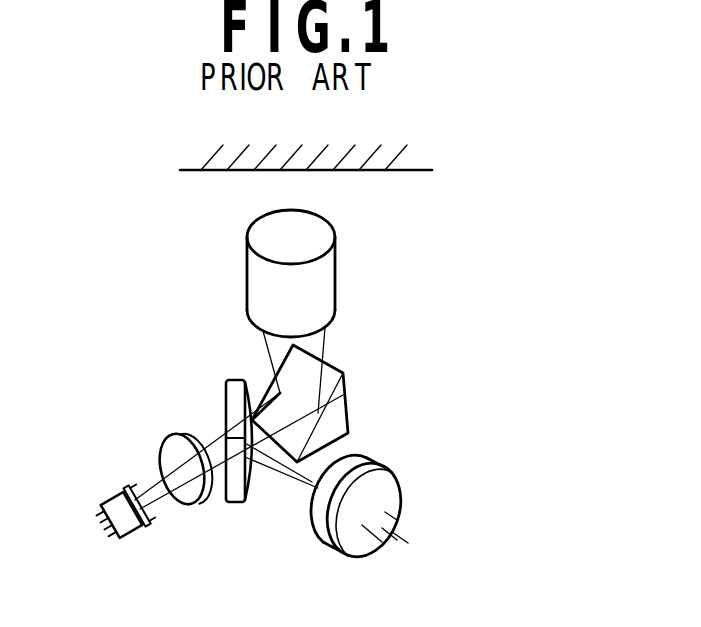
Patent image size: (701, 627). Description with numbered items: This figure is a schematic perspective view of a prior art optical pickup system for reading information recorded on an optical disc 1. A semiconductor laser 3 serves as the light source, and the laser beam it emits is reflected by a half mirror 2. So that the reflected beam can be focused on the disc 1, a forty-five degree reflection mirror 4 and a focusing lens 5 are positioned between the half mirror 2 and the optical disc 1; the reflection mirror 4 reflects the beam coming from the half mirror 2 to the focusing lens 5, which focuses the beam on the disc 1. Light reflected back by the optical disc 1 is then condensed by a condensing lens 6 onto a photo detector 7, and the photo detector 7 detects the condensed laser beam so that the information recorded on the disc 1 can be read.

The optical disc 1 is at (206, 168).
The half mirror 2 is at (232, 396).
The semiconductor laser 3 is at (395, 500).
The 45° reflection mirror 4 is at (343, 413).
The focusing lens 5 is at (332, 285).
The condensing lens 6 is at (172, 452).
The photo detector 7 is at (129, 536).